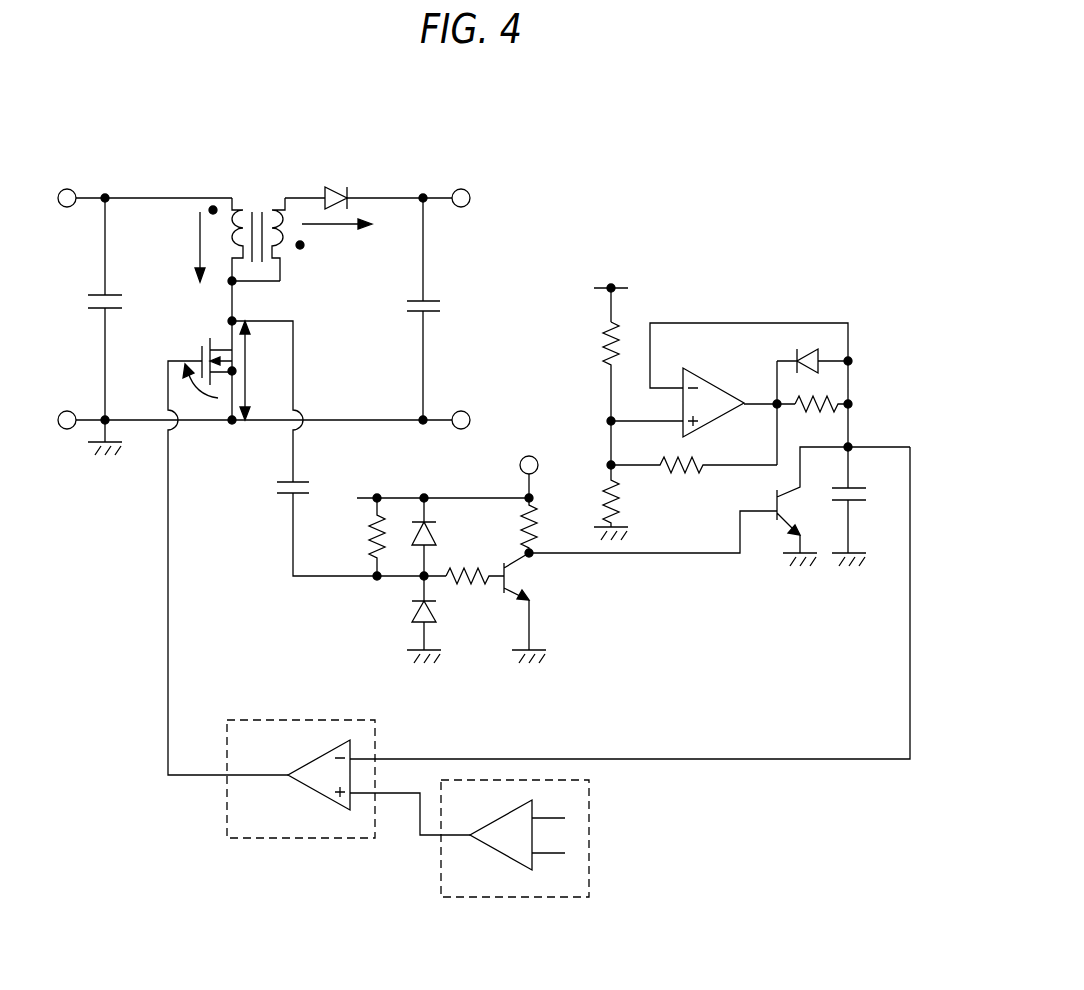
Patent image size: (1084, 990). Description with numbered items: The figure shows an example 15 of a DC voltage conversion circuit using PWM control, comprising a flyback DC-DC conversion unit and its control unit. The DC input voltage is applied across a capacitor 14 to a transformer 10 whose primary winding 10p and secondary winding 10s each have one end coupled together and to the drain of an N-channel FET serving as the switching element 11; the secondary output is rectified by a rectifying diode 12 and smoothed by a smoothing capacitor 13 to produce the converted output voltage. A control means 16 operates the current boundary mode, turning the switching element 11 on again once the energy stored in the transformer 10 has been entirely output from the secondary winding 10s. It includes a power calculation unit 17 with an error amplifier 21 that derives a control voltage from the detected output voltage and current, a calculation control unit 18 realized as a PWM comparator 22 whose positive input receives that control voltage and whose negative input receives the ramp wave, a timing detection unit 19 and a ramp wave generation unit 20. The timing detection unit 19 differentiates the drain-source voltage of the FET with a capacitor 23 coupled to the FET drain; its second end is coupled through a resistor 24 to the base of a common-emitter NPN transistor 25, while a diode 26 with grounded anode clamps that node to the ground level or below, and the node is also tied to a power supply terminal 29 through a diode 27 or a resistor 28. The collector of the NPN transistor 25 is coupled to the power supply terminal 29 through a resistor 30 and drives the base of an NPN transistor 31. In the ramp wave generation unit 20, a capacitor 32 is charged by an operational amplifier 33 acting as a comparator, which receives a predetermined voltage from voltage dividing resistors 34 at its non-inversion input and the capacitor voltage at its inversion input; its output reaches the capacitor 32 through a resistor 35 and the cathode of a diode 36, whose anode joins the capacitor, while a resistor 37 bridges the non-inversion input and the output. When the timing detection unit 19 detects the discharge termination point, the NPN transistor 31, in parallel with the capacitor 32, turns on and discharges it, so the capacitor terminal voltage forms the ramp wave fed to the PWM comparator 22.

The transformer 10 is at (268, 196).
The primary winding 10p is at (232, 196).
The secondary winding 10s is at (285, 196).
The switching element 11 is at (200, 345).
The rectifying diode 12 is at (330, 188).
The smoothing capacitor 13 is at (430, 300).
The capacitor 14 is at (100, 295).
The DC voltage conversion circuit 15 is at (633, 101).
The control means 16 is at (568, 707).
The power calculation unit 17 is at (486, 873).
The calculation control unit 18 is at (301, 767).
The timing detection unit 19 is at (290, 465).
The ramp wave generation unit 20 is at (721, 407).
The error amplifier 21 is at (500, 853).
The PWM comparator 22 is at (316, 796).
The capacitor 23 is at (300, 480).
The resistor 24 is at (463, 586).
The NPN transistor 25 is at (532, 565).
The diode 26 is at (402, 614).
The diode 27 is at (432, 532).
The resistor 28 is at (370, 525).
The power supply terminal 29 is at (522, 456).
The resistor 30 is at (536, 520).
The NPN transistor 31 is at (788, 528).
The capacitor 32 is at (855, 488).
The operational amplifier 33 is at (712, 383).
The voltage dividing resistors 34 is at (600, 346).
The resistor 35 is at (822, 396).
The diode 36 is at (820, 350).
The resistor 37 is at (680, 470).